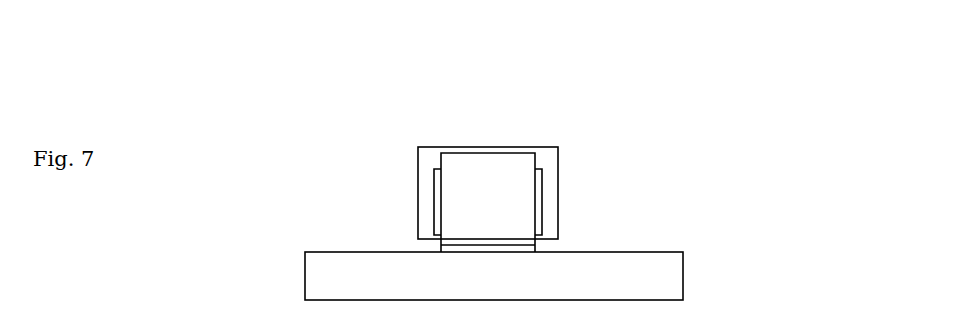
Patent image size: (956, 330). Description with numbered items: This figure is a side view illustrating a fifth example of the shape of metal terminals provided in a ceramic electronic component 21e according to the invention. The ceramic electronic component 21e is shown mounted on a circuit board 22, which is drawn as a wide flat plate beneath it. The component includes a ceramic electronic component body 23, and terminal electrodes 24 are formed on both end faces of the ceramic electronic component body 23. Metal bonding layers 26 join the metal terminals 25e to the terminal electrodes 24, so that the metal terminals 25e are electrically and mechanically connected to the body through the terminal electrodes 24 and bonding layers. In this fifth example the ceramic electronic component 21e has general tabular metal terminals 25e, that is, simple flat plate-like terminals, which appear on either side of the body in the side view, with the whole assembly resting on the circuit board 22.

The ceramic electronic component 21e is at (330, 78).
The circuit board 22 is at (668, 282).
The ceramic electronic component body 23 is at (551, 147).
The terminal electrodes 24 is at (432, 157).
The metal terminals 25e is at (453, 193).
The metal bonding layers 26 is at (541, 196).